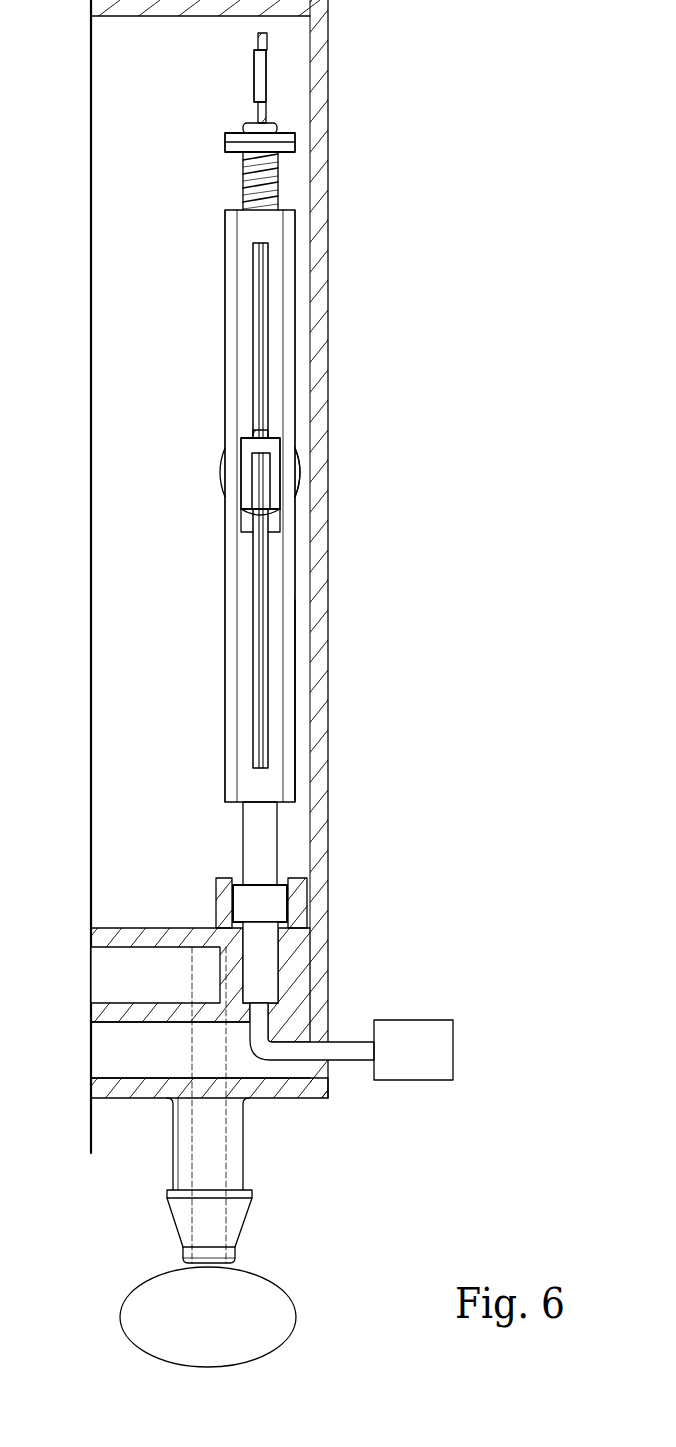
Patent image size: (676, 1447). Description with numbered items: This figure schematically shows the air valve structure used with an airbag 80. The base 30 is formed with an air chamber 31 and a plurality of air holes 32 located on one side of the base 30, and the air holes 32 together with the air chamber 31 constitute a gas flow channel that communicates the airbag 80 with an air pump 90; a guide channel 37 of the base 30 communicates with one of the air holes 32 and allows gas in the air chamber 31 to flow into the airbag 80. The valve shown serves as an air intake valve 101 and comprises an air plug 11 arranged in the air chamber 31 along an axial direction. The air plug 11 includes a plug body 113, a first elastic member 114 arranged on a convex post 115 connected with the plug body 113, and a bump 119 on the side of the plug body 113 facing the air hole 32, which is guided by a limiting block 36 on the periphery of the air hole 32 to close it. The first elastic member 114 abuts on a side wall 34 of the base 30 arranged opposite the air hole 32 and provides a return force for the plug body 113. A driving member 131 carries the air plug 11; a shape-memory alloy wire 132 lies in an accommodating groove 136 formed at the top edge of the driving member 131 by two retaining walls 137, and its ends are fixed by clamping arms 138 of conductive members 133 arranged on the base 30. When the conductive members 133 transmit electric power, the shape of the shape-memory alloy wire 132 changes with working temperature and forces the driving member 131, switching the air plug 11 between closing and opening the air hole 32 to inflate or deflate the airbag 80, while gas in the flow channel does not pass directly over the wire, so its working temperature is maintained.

The air plug 11 is at (344, 474).
The base 30 is at (328, 352).
The air chamber 31 is at (135, 798).
The air hole 32 is at (145, 928).
The side wall 34 is at (225, 137).
The limiting block 36 is at (295, 878).
The guide channel 37 is at (172, 1122).
The airbag 80 is at (123, 1297).
The air pump 90 is at (413, 1082).
The air intake valve 101 is at (316, 698).
The plug body 113 is at (323, 506).
The first elastic member 114 is at (272, 182).
The convex post 115 is at (282, 157).
The bump 119 is at (285, 903).
The driving member 131 is at (320, 465).
The shape-memory alloy wire 132 is at (268, 594).
The conductive member 133 is at (280, 52).
The accommodating groove 136 is at (268, 458).
The retaining wall 137 is at (268, 501).
The clamping arm 138 is at (258, 82).